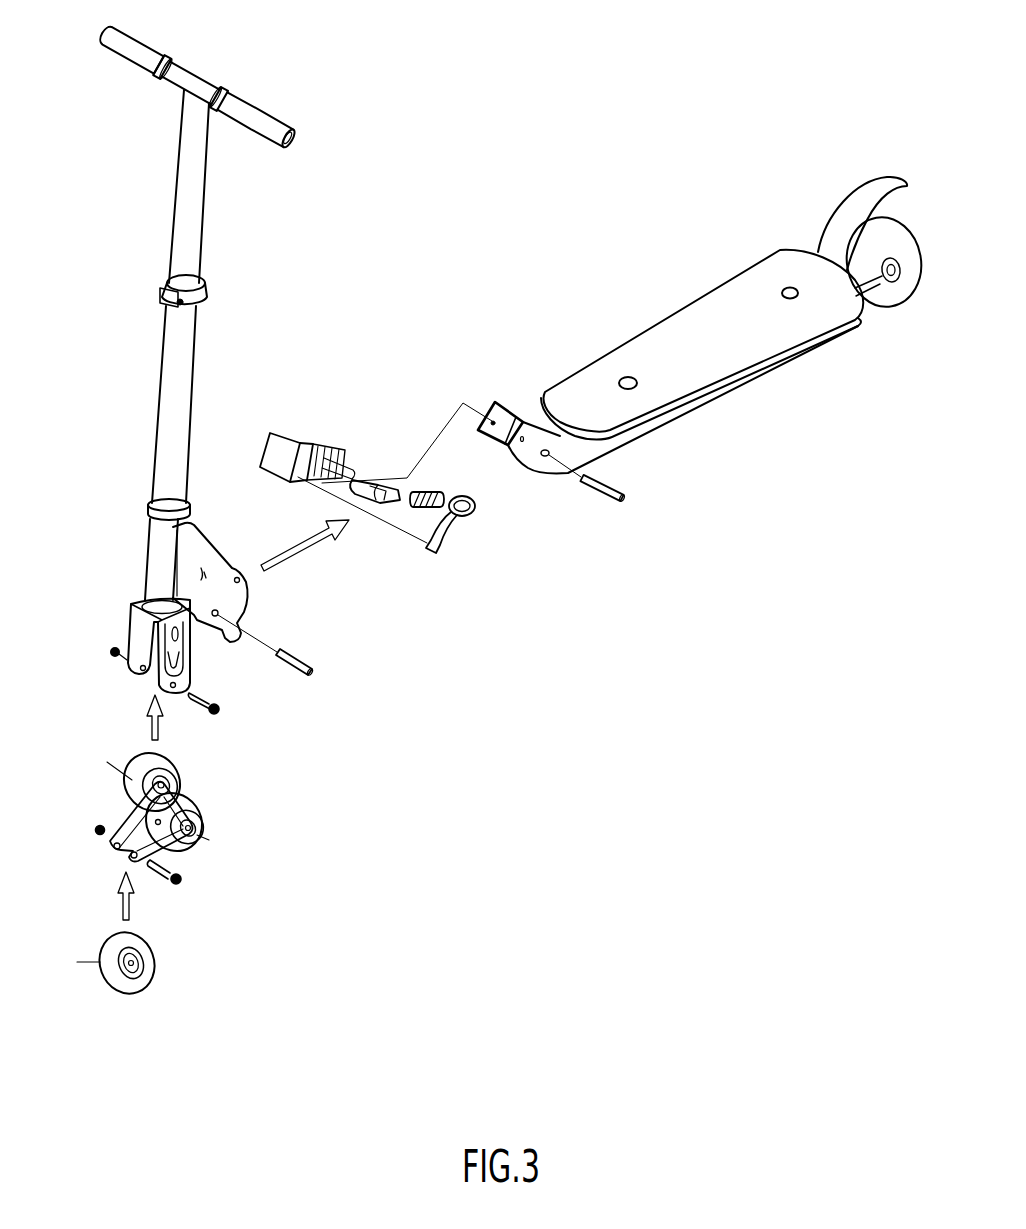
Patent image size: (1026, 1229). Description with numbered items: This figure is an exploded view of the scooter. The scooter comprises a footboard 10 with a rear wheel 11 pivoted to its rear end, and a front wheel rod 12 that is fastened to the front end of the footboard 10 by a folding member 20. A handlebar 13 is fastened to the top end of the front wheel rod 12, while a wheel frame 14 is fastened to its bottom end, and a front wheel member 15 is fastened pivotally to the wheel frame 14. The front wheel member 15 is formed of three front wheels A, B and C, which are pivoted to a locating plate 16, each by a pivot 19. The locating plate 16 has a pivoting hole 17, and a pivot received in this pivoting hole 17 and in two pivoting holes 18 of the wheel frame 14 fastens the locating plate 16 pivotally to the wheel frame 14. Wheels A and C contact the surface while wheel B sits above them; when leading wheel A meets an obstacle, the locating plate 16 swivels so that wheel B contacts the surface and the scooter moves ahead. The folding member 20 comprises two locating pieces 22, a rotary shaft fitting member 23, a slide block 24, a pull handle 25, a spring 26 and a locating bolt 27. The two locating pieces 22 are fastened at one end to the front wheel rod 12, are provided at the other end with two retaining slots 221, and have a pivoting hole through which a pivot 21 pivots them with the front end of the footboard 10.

The footboard 10 is at (641, 295).
The rear wheel 11 is at (917, 232).
The front wheel rod 12 is at (130, 488).
The handlebar 13 is at (183, 203).
The wheel frame 14 is at (133, 623).
The front wheel member 15 is at (140, 826).
The locating plate 16 is at (118, 830).
The pivoting hole 17 is at (178, 803).
The pivoting holes 18 is at (176, 685).
The pivot 19 is at (135, 858).
The folding member 20 is at (376, 448).
The pivot 21 is at (296, 654).
The locating pieces 22 is at (218, 565).
The retaining slots 221 is at (238, 577).
The rotary shaft fitting member 23 is at (279, 446).
The slide block 24 is at (373, 482).
The pull handle 25 is at (450, 528).
The spring 26 is at (428, 491).
The locating bolt 27 is at (607, 497).